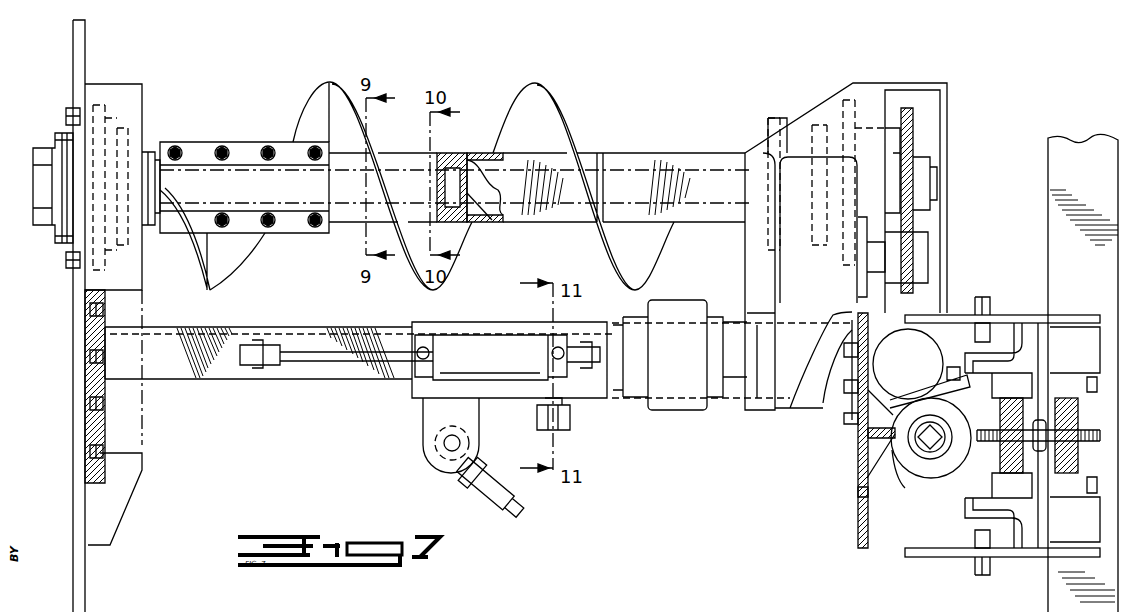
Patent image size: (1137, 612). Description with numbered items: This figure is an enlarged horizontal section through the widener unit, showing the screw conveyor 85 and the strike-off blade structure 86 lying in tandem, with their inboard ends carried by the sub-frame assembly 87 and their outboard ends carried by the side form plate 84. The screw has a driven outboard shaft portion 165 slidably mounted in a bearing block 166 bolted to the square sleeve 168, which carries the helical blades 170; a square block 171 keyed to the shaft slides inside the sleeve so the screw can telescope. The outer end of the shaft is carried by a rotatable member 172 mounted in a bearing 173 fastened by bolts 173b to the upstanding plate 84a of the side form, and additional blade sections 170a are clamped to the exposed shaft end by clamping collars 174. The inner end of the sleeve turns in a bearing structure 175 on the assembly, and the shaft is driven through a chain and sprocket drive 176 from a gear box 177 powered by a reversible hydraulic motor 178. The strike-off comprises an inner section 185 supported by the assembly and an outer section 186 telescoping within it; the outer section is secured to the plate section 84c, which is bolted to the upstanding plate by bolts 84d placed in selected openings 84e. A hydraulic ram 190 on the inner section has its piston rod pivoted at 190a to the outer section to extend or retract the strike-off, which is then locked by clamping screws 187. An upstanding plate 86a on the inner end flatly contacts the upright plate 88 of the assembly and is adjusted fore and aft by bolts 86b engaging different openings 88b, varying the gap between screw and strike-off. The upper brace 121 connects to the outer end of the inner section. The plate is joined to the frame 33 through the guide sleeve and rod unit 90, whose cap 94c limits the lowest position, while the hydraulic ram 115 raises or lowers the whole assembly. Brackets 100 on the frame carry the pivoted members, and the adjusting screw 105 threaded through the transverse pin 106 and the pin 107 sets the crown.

The upstanding plate 84a is at (73, 61).
The side form plate 84 is at (151, 115).
The bearing 173 is at (33, 178).
The bolts 173b is at (66, 259).
The rotatable member 172 is at (150, 228).
The clamping collars 174 is at (255, 142).
The additional blade sections 170a is at (250, 259).
The sleeve 168 is at (697, 155).
The screw conveyor 85 is at (512, 84).
The helical blades 170 is at (574, 133).
The bearing block 166 is at (412, 165).
The square block 171 is at (482, 153).
The driven outboard shaft portion 165 is at (478, 205).
The sub-frame assembly 87 is at (836, 98).
The bearing structure 175 is at (783, 118).
The chain and sprocket drive 176 is at (905, 108).
The gear box 177 is at (775, 270).
The frame 33 is at (1088, 146).
The strike-off blade structure 86 is at (312, 324).
The plate section 84c is at (105, 440).
The bolts 84d is at (88, 401).
The openings 84e is at (88, 450).
The outer section 186 is at (222, 379).
The pivot 190a is at (270, 366).
The hydraulic ram 190 is at (448, 368).
The clamping screws 187 is at (572, 423).
The upper brace 121 is at (516, 496).
The reversible hydraulic motor 178 is at (668, 392).
The inner section 185 is at (734, 399).
The bolts 86b is at (846, 323).
The upright plate 88 is at (862, 550).
The openings 88b is at (860, 470).
The upstanding plate 86a is at (858, 441).
The cap 94c is at (922, 466).
The guide sleeve and rod unit 90 is at (946, 468).
The hydraulic ram 115 is at (926, 350).
The brackets 100 is at (1001, 315).
The transverse pin 106 is at (1020, 415).
The pin 107 is at (1067, 466).
The adjusting screw 105 is at (1089, 430).